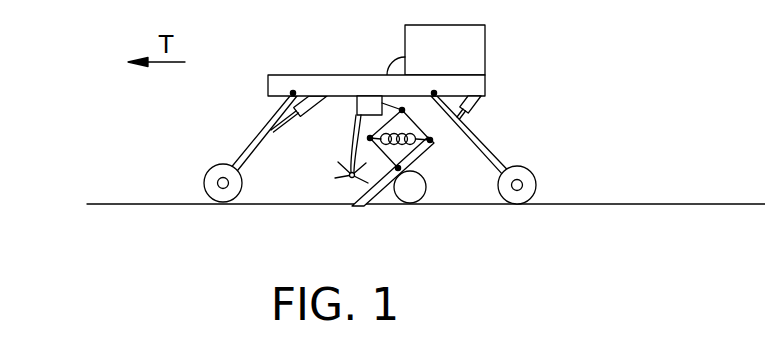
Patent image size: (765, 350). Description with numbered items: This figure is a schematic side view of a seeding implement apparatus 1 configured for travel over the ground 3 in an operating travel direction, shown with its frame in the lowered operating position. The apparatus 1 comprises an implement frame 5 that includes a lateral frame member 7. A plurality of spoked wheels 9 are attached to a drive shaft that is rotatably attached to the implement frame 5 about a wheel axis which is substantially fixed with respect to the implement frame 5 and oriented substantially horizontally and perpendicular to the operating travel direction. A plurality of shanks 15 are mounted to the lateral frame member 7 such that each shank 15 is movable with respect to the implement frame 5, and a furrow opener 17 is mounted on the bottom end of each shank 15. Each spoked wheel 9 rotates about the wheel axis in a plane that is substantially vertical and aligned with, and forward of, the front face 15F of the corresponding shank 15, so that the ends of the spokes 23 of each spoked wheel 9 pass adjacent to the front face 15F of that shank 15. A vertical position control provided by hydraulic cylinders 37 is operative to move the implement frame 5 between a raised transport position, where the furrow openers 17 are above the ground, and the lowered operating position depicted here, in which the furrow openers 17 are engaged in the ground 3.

The seeding implement apparatus 1 is at (567, 37).
The ground 3 is at (122, 203).
The implement frame 5 is at (288, 75).
The lateral frame member 7 is at (356, 107).
The spoked wheel 9 is at (349, 175).
The shank 15 is at (426, 163).
The front face of shank 15F is at (354, 180).
The furrow opener 17 is at (362, 208).
The spoke 23 is at (367, 183).
The hydraulic cylinder 37 is at (480, 106).